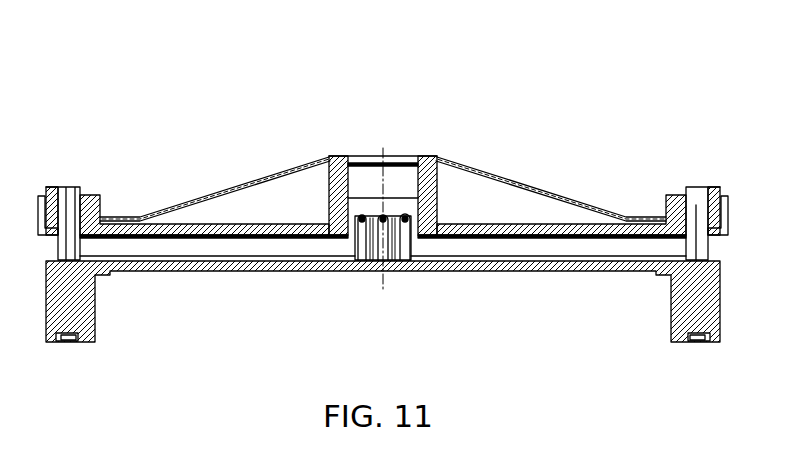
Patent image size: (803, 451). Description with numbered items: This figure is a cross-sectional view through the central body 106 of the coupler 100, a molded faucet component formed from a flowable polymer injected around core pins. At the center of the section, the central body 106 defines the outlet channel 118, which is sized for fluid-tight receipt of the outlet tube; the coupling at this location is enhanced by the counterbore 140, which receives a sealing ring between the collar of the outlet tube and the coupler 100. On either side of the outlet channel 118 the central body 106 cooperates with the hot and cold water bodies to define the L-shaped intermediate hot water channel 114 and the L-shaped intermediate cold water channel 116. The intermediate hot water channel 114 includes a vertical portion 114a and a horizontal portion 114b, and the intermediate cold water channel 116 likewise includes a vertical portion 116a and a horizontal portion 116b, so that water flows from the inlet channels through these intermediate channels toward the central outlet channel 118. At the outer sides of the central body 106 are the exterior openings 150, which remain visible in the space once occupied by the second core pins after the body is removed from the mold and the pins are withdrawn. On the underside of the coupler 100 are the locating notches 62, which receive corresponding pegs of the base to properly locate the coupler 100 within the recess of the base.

The coupler 100 is at (652, 53).
The central body 106 is at (279, 266).
The locating notches 62 is at (61, 336).
The intermediate hot water channel 114 is at (544, 239).
The vertical portion 114a is at (689, 176).
The horizontal portion 114b is at (596, 231).
The intermediate cold water channel 116 is at (184, 242).
The vertical portion 116a is at (62, 196).
The horizontal portion 116b is at (126, 241).
The outlet channel 118 is at (397, 159).
The counterbore 140 is at (348, 145).
The exterior openings 150 is at (41, 240).